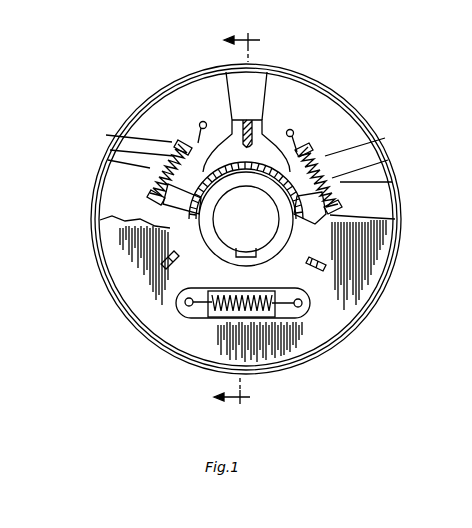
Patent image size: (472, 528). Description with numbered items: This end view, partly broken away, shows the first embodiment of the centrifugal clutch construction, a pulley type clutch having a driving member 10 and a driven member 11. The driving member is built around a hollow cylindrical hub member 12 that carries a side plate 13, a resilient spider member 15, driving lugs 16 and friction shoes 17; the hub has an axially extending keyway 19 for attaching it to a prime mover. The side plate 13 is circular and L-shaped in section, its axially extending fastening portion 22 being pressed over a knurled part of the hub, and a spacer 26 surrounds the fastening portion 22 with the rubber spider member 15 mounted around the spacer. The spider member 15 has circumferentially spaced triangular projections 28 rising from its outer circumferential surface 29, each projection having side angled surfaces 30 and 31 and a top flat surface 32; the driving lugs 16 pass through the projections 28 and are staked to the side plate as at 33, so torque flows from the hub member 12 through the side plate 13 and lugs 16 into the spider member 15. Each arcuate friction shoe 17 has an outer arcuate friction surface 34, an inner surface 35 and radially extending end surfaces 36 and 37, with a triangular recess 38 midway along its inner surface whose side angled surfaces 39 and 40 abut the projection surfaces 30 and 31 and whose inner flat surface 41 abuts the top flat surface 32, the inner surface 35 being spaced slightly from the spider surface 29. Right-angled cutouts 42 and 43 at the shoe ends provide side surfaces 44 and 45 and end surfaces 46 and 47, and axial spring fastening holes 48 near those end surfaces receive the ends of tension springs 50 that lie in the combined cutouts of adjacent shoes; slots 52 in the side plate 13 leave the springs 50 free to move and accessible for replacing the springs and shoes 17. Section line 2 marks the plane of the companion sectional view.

The driving member 10 is at (213, 128).
The driven member 11 is at (130, 108).
The hub member 12 is at (272, 254).
The side plate 13 is at (133, 274).
The resilient spider member 15 is at (312, 128).
The driving lugs 16 is at (235, 147).
The friction shoes 17 is at (112, 214).
The keyway 19 is at (236, 254).
The fastening portion 22 is at (178, 206).
The spacer 26 is at (300, 232).
The projections 28 is at (231, 115).
The outer circumferential surface 29 is at (160, 205).
The side angled surface 30 is at (220, 130).
The side angled surface 31 is at (283, 112).
The top flat surface 32 is at (268, 92).
The staked end 33 is at (165, 268).
The arcuate friction surface 34 is at (132, 105).
The inner surface 35 is at (200, 125).
The end surface 36 is at (148, 150).
The end surface 37 is at (342, 182).
The triangular recess 38 is at (262, 140).
The side angled surface of recess 39 is at (203, 95).
The side angled surface of recess 40 is at (270, 150).
The inner flat surface 41 is at (262, 118).
The cutout 42 is at (158, 143).
The cutout 43 is at (330, 152).
The side surface 44 is at (160, 166).
The side surface 45 is at (337, 170).
The end surface of cutout 46 is at (185, 143).
The end surface of cutout 47 is at (322, 140).
The spring fastening holes 48 is at (183, 141).
The tension springs 50 is at (148, 193).
The slots 52 is at (186, 320).
The section line 2- 2 is at (237, 220).